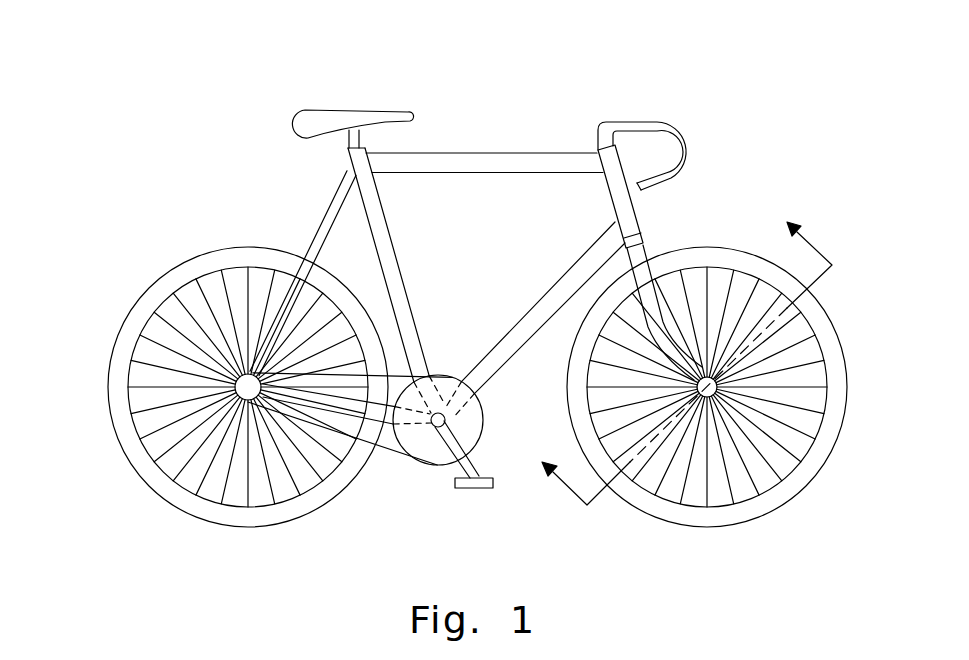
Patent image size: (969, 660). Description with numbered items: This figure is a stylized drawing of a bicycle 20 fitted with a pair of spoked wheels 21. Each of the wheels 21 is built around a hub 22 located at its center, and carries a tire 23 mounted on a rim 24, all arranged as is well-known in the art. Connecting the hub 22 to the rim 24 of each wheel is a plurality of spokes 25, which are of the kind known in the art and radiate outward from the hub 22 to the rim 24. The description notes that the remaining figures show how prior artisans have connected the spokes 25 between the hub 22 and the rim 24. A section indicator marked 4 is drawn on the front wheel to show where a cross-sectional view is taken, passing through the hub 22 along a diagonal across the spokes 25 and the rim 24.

The bicycle 20 is at (475, 327).
The wheels 21 is at (108, 373).
The hub 22 is at (239, 375).
The tire 23 is at (122, 450).
The rim 24 is at (210, 507).
The spokes 25 is at (293, 485).
The section line 4- 4 is at (677, 346).